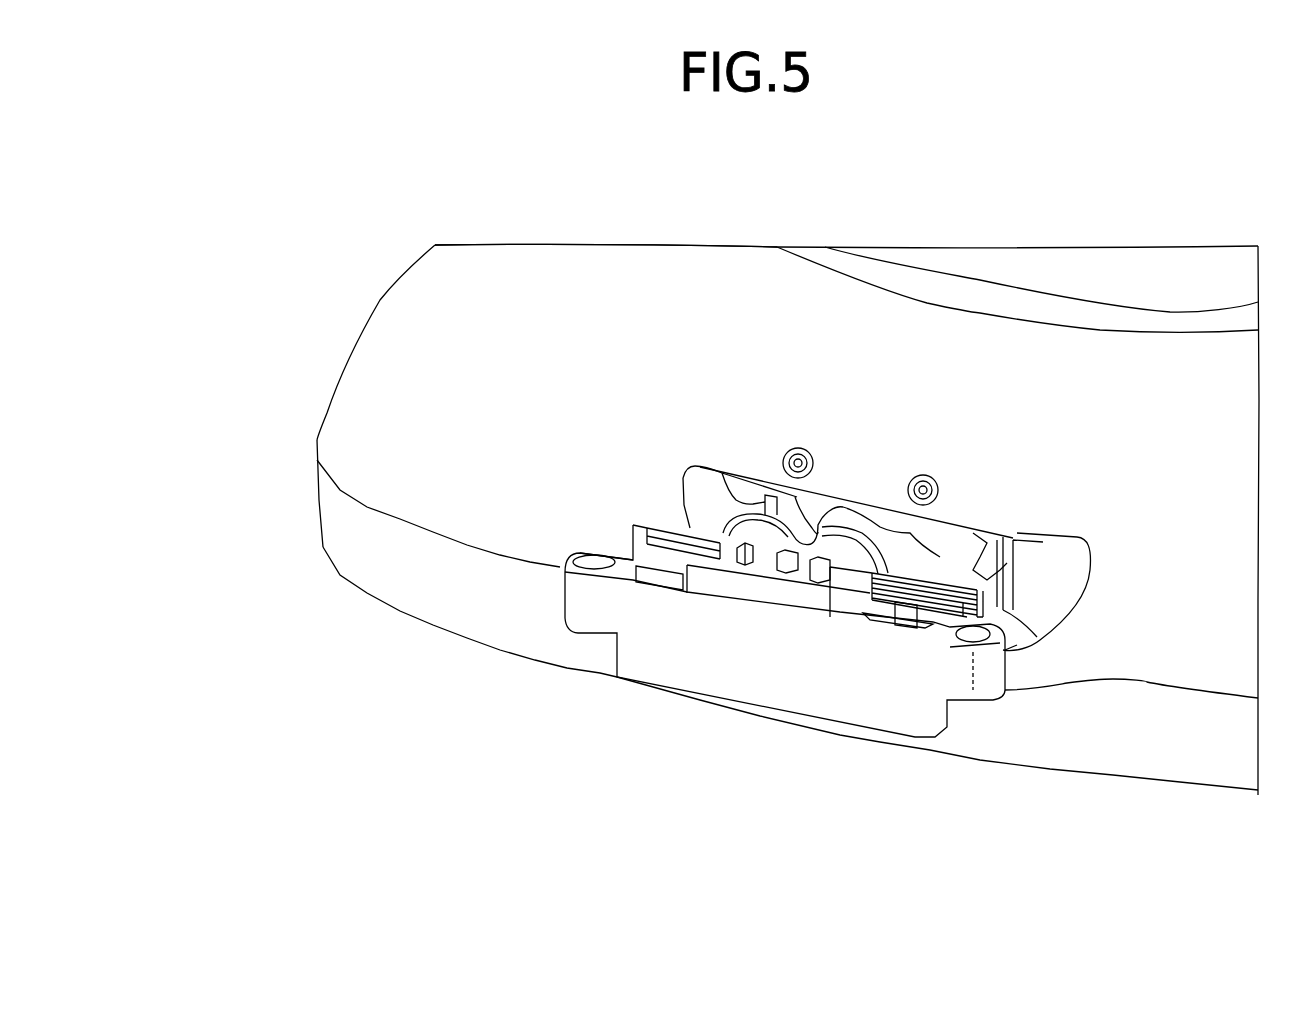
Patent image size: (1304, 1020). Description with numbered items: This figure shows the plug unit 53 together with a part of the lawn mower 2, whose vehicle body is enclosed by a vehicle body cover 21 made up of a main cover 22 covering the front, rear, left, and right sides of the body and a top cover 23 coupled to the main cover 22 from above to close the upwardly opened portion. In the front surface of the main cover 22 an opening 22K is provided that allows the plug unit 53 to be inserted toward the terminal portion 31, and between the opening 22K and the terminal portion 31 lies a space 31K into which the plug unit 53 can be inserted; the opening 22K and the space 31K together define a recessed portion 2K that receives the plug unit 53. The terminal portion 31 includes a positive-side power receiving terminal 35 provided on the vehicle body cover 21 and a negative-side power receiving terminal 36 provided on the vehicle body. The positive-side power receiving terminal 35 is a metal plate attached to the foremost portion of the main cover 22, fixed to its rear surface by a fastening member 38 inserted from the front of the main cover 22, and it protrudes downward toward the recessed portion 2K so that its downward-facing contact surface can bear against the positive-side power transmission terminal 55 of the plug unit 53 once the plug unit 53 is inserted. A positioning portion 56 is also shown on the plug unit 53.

The lawn mower 2 is at (1145, 224).
The vehicle body cover 21 is at (629, 269).
The main cover 22 is at (384, 333).
The top cover 23 is at (545, 257).
The recessed portion 2K is at (228, 345).
The space 31K is at (710, 500).
The opening 22K is at (700, 513).
The terminal portion 31 is at (1017, 643).
The positive-side power receiving terminal 35 is at (862, 513).
The negative-side power receiving terminal 36 is at (1012, 545).
The fastening member 38 is at (798, 447).
The plug unit 53 is at (618, 660).
The positive-side power transmission terminal 55 is at (882, 518).
The positioning portion 56 is at (997, 530).